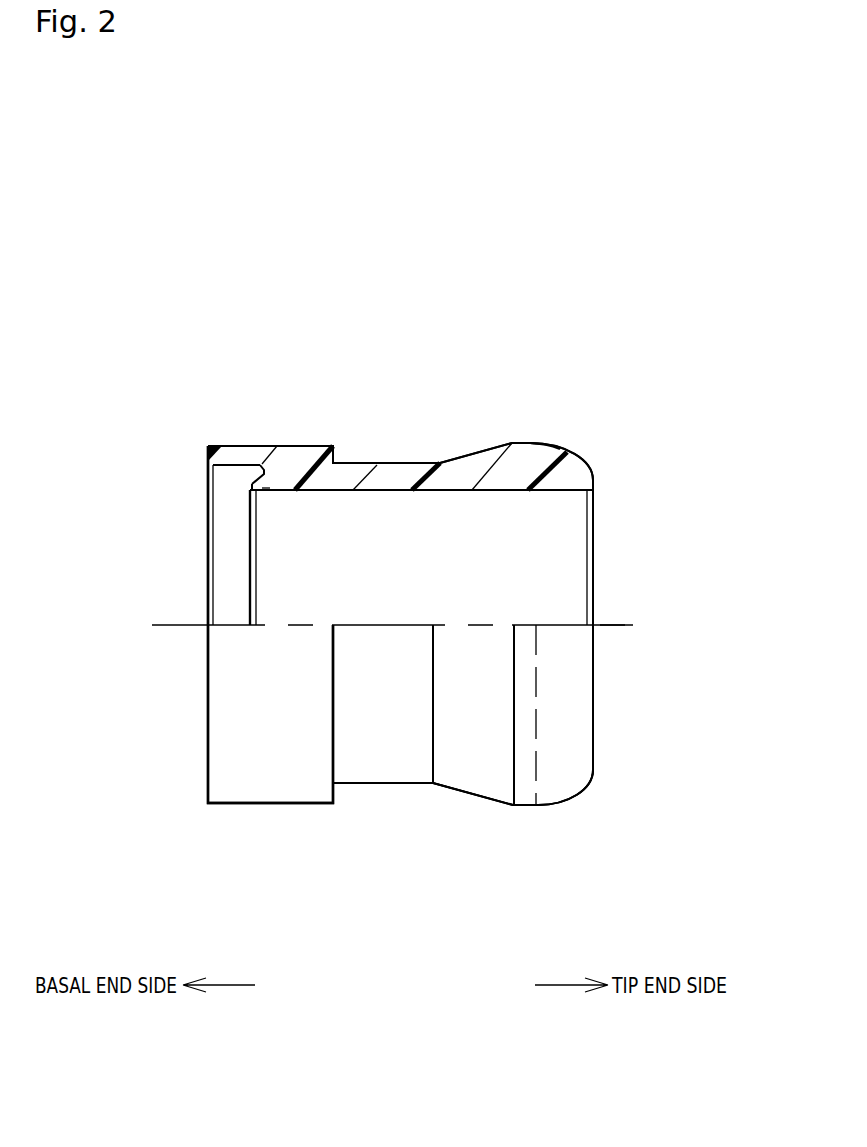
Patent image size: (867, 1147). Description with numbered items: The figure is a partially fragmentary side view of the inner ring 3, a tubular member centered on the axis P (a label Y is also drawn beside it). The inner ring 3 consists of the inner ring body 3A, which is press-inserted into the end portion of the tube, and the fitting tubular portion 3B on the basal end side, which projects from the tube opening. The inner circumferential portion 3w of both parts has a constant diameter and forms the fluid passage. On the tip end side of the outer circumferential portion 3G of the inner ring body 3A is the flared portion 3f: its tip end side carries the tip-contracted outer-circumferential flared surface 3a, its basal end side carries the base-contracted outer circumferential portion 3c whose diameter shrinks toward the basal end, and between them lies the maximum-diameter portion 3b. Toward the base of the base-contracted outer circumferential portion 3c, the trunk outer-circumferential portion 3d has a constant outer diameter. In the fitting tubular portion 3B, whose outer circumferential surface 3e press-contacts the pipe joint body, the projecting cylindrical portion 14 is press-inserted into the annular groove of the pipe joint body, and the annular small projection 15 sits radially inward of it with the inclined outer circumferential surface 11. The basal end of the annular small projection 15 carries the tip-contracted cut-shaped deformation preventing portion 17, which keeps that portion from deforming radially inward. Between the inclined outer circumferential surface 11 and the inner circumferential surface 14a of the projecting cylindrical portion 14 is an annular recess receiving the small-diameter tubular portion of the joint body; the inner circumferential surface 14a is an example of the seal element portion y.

The inner ring 3 is at (423, 400).
The inner ring body 3A is at (512, 482).
The fitting tubular portion 3B is at (313, 457).
The outer circumferential portion 3G is at (527, 443).
The inner circumferential portion 3w is at (452, 491).
The tip-contracted outer-circumferential flared surface 3a is at (563, 783).
The maximum-diameter portion 3b is at (525, 789).
The base-contracted outer circumferential portion 3c is at (473, 786).
The trunk outer-circumferential portion 3d is at (380, 768).
The outer circumferential surface 3e is at (268, 788).
The flared portion 3f is at (578, 893).
The projecting cylindrical portion 14 is at (232, 446).
The inner circumferential surface of the projecting cylindrical portion 14a is at (223, 468).
The inclined outer circumferential surface 11 is at (260, 477).
The annular small projection 15 is at (257, 491).
The deformation preventing portion 17 is at (252, 489).
The seal element portion y is at (255, 446).
The axis P is at (617, 624).
The axial direction Y is at (632, 624).